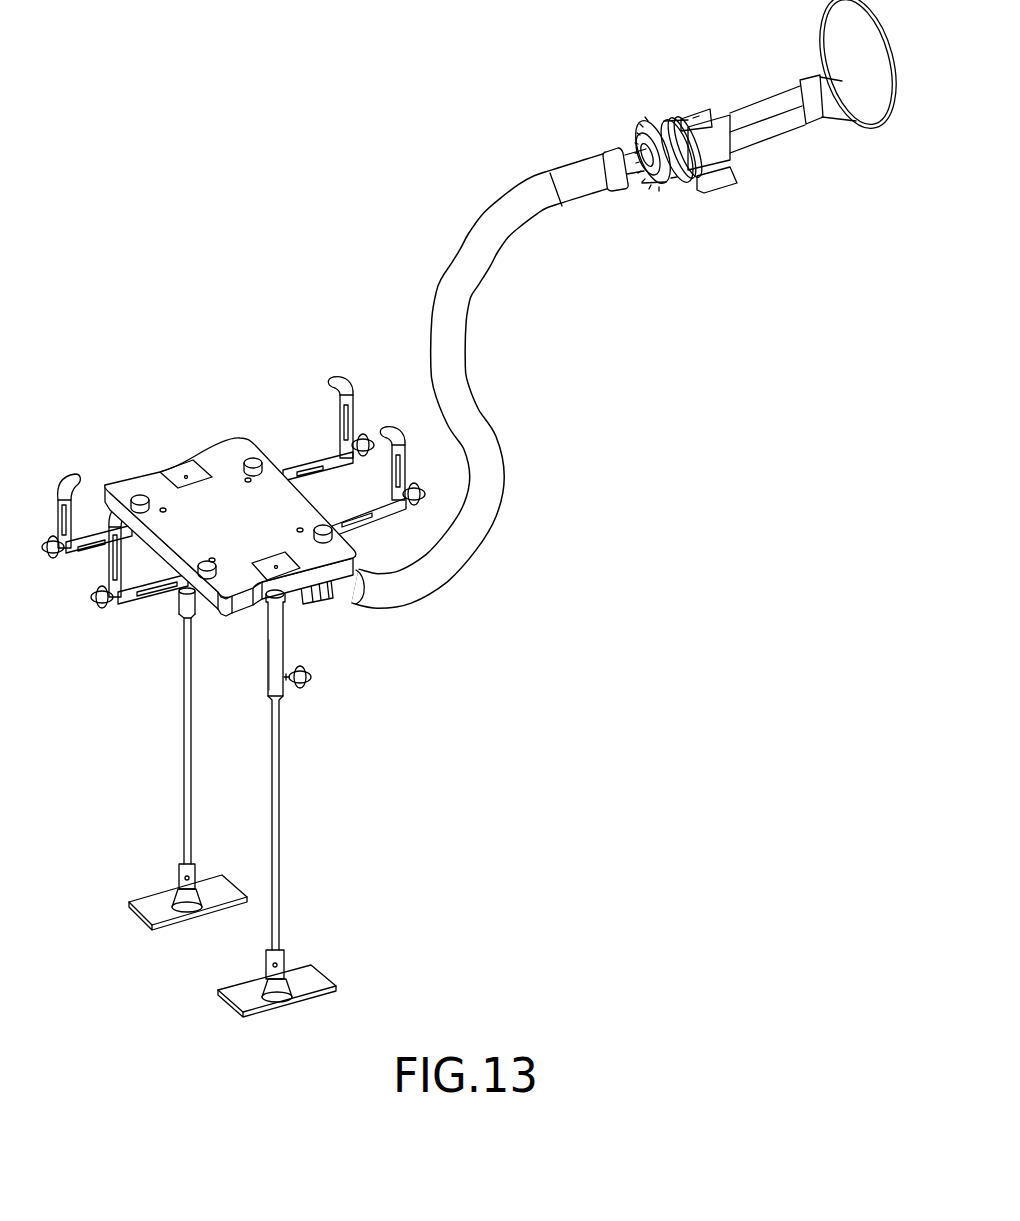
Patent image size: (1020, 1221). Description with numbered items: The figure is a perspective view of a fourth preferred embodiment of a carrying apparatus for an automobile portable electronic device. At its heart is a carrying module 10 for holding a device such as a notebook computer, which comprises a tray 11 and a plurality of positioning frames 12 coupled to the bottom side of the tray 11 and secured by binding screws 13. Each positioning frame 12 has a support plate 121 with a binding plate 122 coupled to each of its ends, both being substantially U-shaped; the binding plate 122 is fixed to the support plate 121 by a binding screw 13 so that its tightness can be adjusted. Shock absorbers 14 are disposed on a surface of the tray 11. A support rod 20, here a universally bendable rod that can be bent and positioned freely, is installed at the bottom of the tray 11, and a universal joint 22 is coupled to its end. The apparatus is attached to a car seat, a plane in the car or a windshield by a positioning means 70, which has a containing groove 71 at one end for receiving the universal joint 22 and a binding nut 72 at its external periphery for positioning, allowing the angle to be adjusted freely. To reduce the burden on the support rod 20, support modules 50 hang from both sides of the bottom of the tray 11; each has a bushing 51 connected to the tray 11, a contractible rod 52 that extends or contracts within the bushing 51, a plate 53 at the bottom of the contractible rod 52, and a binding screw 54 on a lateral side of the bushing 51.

The carrying module 10 is at (231, 520).
The tray 11 is at (228, 460).
The positioning frame 12 is at (231, 534).
The support plate 121 is at (160, 604).
The binding plate 122 is at (107, 562).
The binding screw 13 is at (96, 602).
The shock absorber 14 is at (257, 457).
The support rod 20 is at (481, 336).
The universal joint 22 is at (645, 178).
The support module 50 is at (266, 802).
The bushing 51 is at (280, 636).
The contractible rod 52 is at (280, 858).
The plate 53 is at (312, 978).
The binding screw 54 is at (312, 677).
The positioning means 70 is at (724, 138).
The containing groove 71 is at (637, 138).
The binding nut 72 is at (650, 120).